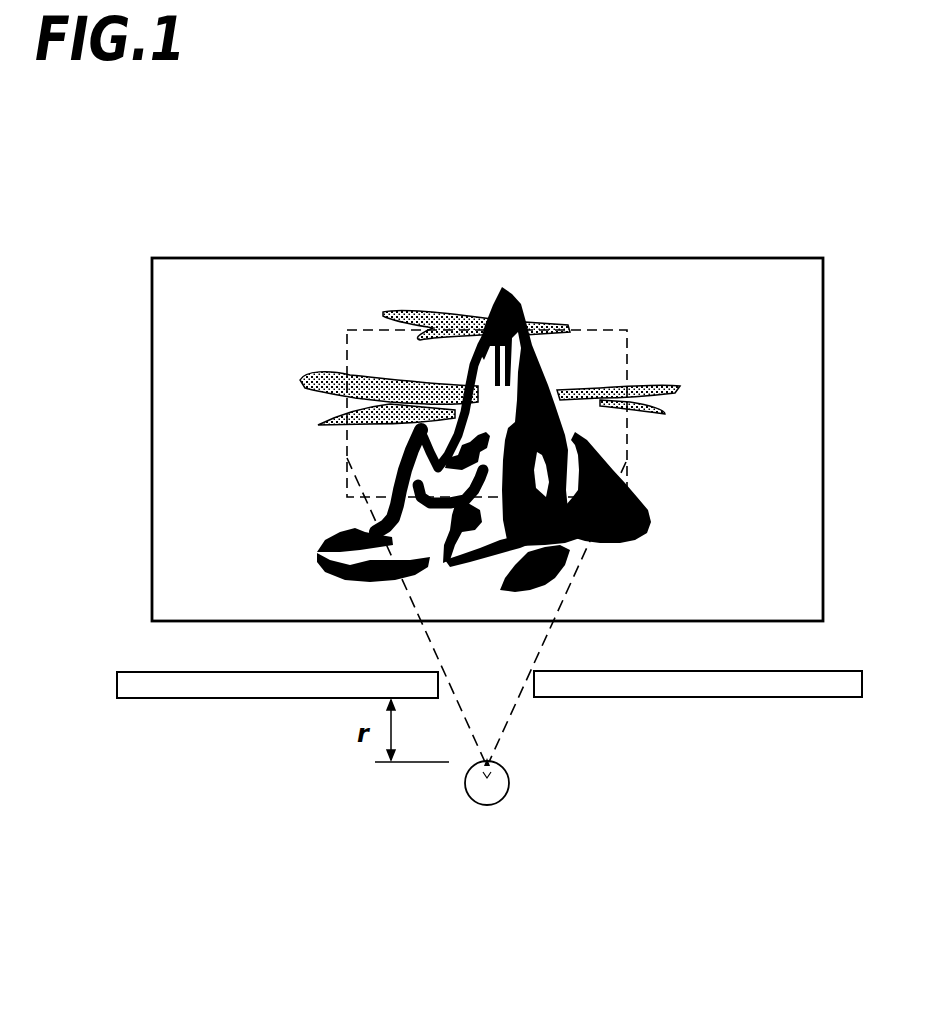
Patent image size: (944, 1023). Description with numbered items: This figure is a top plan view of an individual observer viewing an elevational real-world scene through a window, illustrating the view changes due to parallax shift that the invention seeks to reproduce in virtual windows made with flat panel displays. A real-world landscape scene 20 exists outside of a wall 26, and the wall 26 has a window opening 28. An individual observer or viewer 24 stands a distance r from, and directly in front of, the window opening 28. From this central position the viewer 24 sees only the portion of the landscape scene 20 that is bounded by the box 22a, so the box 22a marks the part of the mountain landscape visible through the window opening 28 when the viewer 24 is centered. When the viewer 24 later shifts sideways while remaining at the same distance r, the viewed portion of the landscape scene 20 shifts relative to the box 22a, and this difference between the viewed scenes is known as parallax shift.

The real-world landscape scene 20 is at (780, 309).
The box 22a is at (627, 346).
The individual observer or viewer 24 is at (506, 800).
The wall 26 is at (145, 700).
The window opening 28 is at (523, 700).